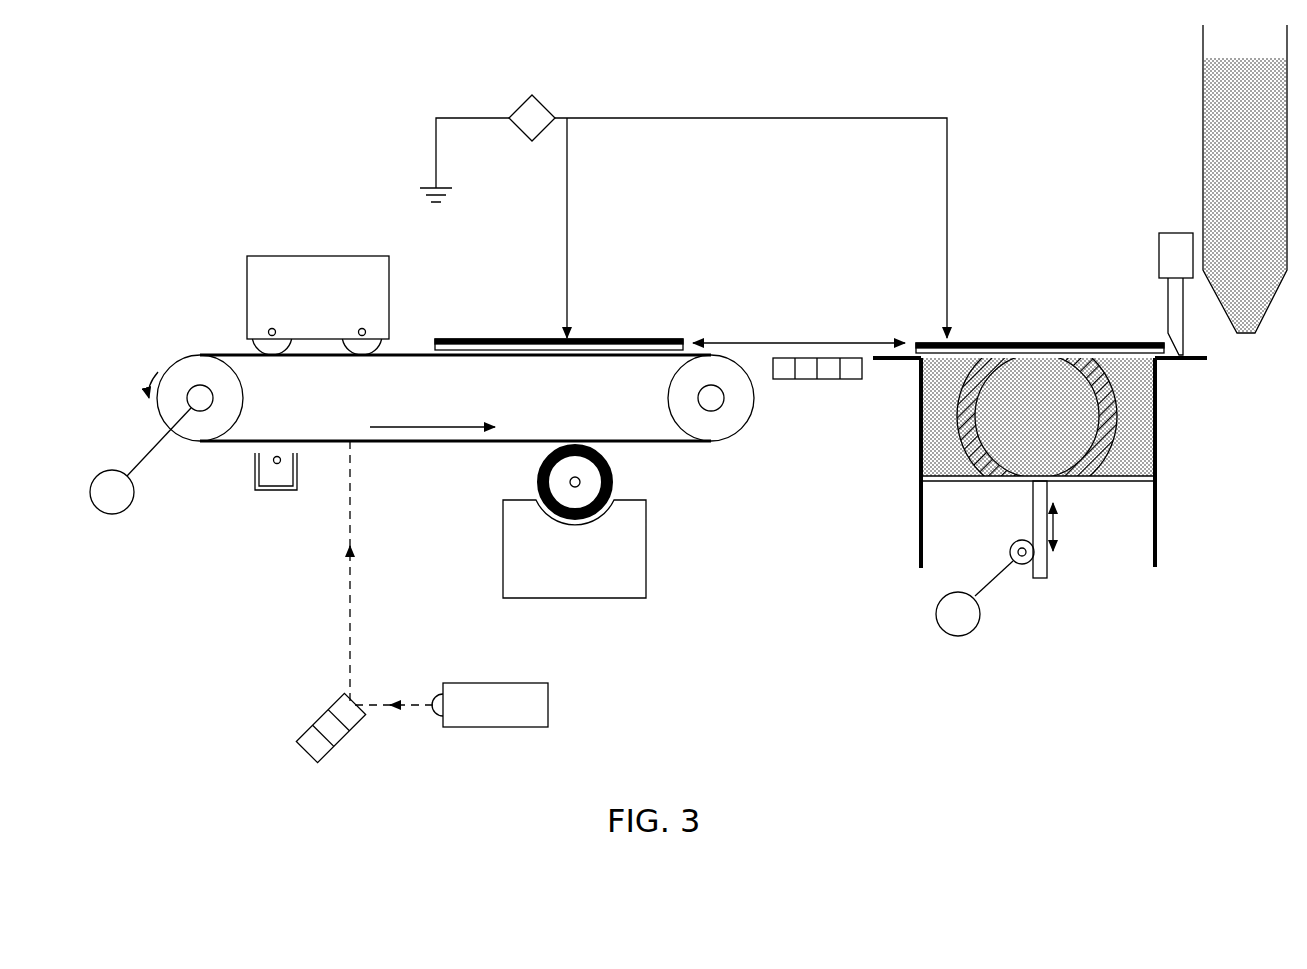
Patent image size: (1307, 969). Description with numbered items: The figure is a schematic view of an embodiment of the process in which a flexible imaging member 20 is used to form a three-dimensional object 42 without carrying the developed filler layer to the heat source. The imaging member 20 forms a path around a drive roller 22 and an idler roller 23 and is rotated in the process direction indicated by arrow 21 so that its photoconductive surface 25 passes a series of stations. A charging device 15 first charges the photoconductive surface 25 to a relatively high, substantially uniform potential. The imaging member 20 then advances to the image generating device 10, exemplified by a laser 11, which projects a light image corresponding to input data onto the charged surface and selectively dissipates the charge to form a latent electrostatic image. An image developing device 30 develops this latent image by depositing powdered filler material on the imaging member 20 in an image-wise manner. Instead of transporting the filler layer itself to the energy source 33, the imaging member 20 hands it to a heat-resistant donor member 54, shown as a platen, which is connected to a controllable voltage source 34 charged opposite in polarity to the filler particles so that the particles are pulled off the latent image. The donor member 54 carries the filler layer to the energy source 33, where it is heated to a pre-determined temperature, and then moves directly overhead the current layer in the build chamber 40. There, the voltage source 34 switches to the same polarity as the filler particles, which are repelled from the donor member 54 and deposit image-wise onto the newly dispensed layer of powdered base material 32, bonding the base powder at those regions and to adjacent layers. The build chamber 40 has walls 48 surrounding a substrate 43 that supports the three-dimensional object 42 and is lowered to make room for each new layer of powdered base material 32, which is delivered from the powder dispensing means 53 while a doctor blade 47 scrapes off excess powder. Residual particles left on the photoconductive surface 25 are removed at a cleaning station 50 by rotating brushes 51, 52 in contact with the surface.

The image generating device 10 is at (438, 617).
The laser 11 is at (533, 727).
The charging device 15 is at (272, 492).
The imaging member 20 is at (426, 423).
The arrow 21 is at (440, 420).
The drive roller 22 is at (193, 364).
The idler roller 23 is at (712, 440).
The photoconductive surface 25 is at (320, 358).
The image developing device 30 is at (570, 612).
The powdered base material 32 is at (930, 437).
The energy source 33 is at (803, 379).
The controllable voltage source 34 is at (519, 131).
The build chamber 40 is at (1089, 344).
The three-dimensional object 42 is at (995, 440).
The substrate 43 is at (1003, 482).
The doctor blade 47 is at (1159, 243).
The walls 48 is at (1155, 565).
The cleaning station 50 is at (315, 275).
The brush 51 is at (375, 343).
The brush 52 is at (262, 342).
The powder dispensing means 53 is at (1203, 233).
The donor member 54 is at (611, 338).